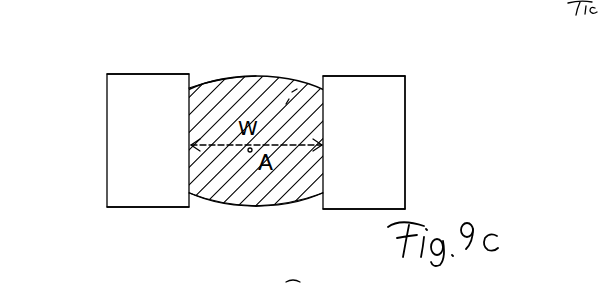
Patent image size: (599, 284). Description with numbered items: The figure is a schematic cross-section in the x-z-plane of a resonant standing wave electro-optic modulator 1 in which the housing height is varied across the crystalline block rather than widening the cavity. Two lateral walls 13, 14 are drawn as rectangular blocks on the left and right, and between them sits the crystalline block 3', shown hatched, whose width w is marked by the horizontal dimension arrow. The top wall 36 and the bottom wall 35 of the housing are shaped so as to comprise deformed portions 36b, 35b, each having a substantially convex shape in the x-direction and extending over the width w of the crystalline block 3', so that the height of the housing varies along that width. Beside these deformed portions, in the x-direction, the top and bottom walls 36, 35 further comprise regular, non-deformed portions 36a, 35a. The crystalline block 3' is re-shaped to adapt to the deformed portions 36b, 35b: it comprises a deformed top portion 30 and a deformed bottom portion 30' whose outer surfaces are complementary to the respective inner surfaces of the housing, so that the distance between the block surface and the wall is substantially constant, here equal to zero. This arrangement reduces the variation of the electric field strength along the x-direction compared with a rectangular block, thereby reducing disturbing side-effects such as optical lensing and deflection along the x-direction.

The electro-optic modulator 1 is at (455, 85).
The crystalline block 3' is at (325, 52).
The lateral wall 13 is at (107, 112).
The lateral wall 14 is at (406, 125).
The deformed top portion 30 is at (252, 119).
The deformed bottom portion 30' is at (289, 224).
The bottom wall 35 is at (350, 209).
The regular portion 35a is at (127, 207).
The deformed portion 35b is at (215, 210).
The top wall 36 is at (362, 77).
The regular portion 36a is at (133, 73).
The deformed portion 36b is at (210, 77).